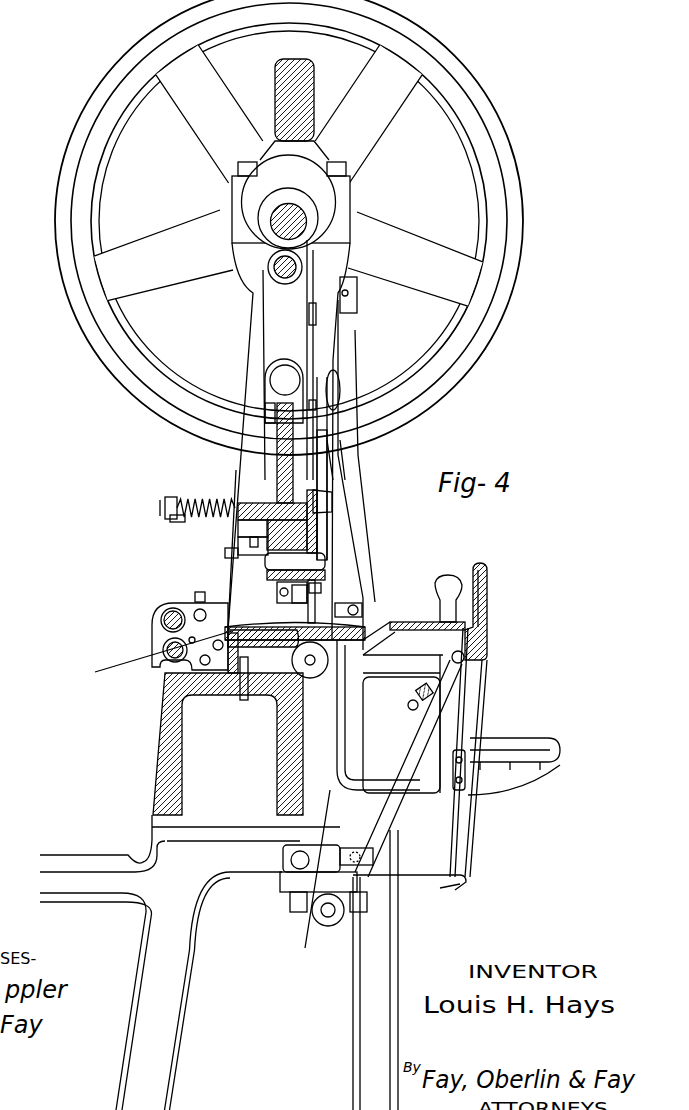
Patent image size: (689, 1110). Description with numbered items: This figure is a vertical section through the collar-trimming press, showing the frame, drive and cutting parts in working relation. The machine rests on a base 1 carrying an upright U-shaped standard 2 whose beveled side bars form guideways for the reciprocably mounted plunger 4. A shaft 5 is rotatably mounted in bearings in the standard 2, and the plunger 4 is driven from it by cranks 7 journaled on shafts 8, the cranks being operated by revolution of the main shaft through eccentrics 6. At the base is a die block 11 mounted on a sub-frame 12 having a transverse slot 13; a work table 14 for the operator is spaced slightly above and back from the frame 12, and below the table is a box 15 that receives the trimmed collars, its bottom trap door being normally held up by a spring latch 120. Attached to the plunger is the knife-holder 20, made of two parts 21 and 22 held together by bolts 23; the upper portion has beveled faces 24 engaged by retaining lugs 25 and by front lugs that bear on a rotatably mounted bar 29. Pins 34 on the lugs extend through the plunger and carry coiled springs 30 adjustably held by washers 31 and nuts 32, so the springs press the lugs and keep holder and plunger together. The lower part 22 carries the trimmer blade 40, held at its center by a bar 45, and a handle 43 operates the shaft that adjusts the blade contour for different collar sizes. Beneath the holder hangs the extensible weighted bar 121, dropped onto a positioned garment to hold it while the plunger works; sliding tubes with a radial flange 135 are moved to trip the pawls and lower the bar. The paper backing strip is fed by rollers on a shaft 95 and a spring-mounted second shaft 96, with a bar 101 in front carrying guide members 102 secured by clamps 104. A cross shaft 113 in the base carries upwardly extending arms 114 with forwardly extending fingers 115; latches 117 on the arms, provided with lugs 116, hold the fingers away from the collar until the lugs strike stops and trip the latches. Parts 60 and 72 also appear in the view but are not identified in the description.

The base 1 is at (87, 880).
The upright U-shaped standard 2 is at (237, 553).
The plunger 4 is at (287, 467).
The shaft 5 is at (300, 222).
The eccentrics 6 is at (291, 154).
The cranks 7 is at (345, 186).
The shafts 8 is at (278, 377).
The die block 11 is at (277, 628).
The sub-frame 12 is at (292, 660).
The slot 13 is at (303, 628).
The work table 14 is at (415, 622).
The box 15 is at (390, 716).
The knife-holder 20 is at (267, 562).
The upper part of knife-holder 21 is at (267, 552).
The lower part of knife-holder 22 is at (267, 575).
The bolts 23 is at (333, 510).
The beveled faces 24 is at (247, 540).
The retaining lugs 25 is at (243, 527).
The rotatably mounted bar 29 is at (330, 477).
The coiled springs 30 is at (197, 502).
The washers 31 is at (194, 546).
The nuts 32 is at (172, 502).
The pins 34 is at (178, 518).
The trimmer blade 40 is at (317, 572).
The handle 43 is at (322, 435).
The bar 45 is at (295, 621).
The flywheel 60 is at (497, 125).
The handle knob 72 is at (453, 590).
The shaft 95 is at (170, 615).
The second shaft 96 is at (162, 657).
The bar 101 is at (198, 600).
The guide members 102 is at (207, 693).
The clamps 104 is at (202, 560).
The cross shaft 113 is at (333, 912).
The arms 114 is at (420, 732).
The fingers 115 is at (473, 628).
The lugs 116 is at (430, 700).
The latches 117 is at (448, 715).
The spring latch 120 is at (437, 892).
The extensible weighted bar 121 is at (313, 588).
The radial flange 135 is at (320, 618).